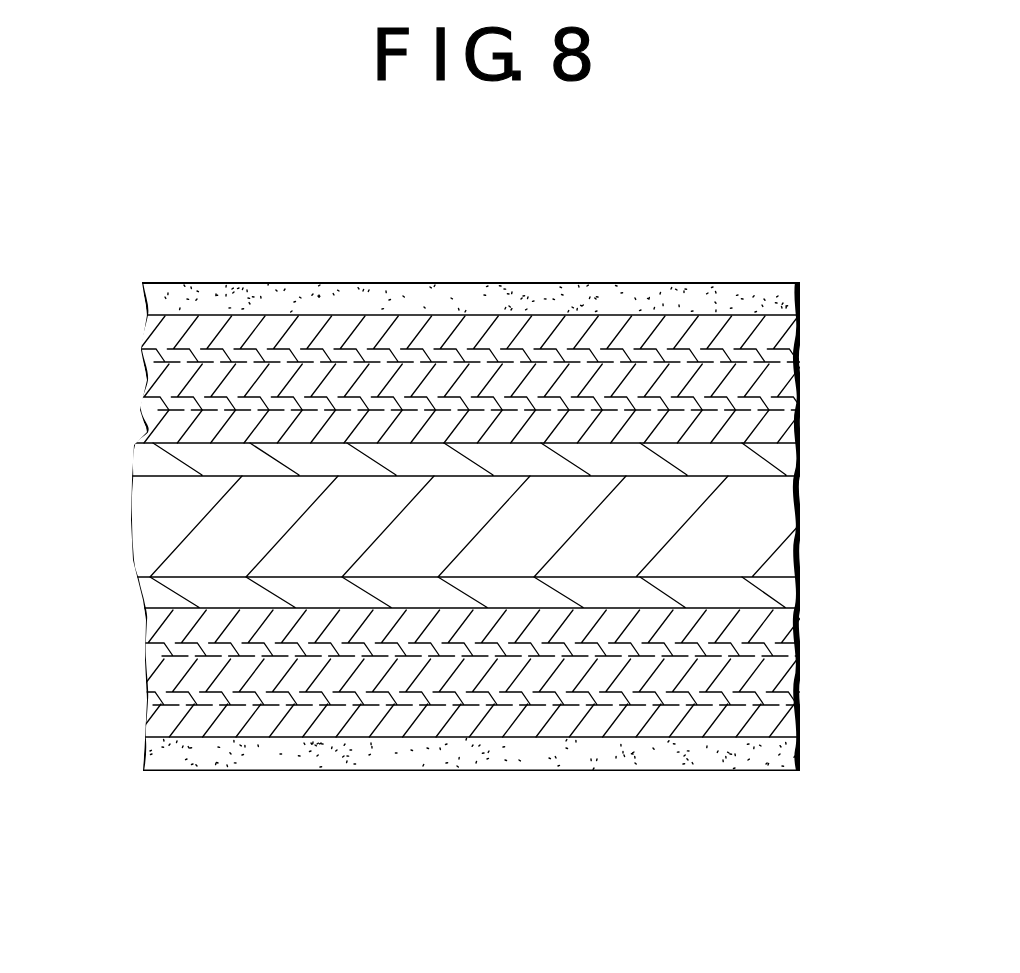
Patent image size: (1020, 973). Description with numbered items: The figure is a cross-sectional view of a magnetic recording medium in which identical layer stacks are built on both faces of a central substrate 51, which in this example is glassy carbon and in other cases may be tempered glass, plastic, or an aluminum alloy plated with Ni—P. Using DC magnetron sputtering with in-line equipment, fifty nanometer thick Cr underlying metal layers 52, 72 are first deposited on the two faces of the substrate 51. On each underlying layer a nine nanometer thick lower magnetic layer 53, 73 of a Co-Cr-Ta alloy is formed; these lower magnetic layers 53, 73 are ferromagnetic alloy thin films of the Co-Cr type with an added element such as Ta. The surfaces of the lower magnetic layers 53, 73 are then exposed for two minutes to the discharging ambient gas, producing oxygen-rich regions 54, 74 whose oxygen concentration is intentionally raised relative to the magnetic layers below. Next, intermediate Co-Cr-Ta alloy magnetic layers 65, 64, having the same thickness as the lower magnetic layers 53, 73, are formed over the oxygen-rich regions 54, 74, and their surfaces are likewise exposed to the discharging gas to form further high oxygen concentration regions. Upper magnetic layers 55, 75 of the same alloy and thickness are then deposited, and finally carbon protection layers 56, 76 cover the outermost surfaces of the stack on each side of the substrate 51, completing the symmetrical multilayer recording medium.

The substrate 51 is at (778, 531).
The underlying metal layer 52 is at (778, 460).
The lower magnetic layer 53 is at (778, 430).
The oxygen-rich region 54 is at (778, 401).
The upper magnetic layer 55 is at (472, 330).
The protection layer 56 is at (241, 347).
The magnetic layer 64 is at (778, 722).
The magnetic layer 65 is at (778, 378).
The underlying metal layer 72 is at (778, 593).
The lower magnetic layer 73 is at (778, 628).
The oxygen-rich region 74 is at (778, 650).
The upper magnetic layer 75 is at (498, 722).
The protection layer 76 is at (246, 702).